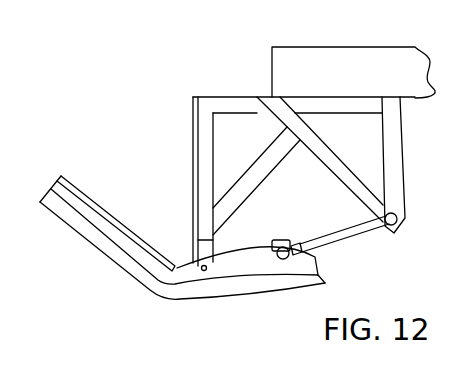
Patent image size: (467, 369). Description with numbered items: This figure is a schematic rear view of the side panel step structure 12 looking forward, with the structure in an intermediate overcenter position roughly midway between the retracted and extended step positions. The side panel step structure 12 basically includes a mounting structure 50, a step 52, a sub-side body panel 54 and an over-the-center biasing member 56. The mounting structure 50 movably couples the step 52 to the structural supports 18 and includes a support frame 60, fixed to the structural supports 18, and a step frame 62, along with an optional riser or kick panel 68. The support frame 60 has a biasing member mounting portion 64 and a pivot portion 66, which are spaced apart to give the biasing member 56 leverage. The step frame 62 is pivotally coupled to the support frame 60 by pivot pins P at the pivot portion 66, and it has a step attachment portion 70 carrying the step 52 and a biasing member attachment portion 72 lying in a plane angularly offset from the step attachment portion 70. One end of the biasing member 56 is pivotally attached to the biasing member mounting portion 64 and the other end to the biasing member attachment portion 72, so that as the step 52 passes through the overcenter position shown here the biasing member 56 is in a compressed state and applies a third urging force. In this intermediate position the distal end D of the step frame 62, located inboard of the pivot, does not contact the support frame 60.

The side panel step structure 12 is at (93, 94).
The structural support 18 is at (358, 68).
The mounting structure 50 is at (245, 49).
The step 52 is at (114, 213).
The sub-side body panel 54 is at (82, 237).
The over-the-center biasing member 56 is at (349, 234).
The support frame 60 is at (222, 97).
The step frame 62 is at (68, 198).
The biasing member mounting portion 64 is at (398, 198).
The pivot portion 66 is at (200, 255).
The kick panel 68 is at (193, 145).
The step attachment portion 70 is at (138, 252).
The biasing member attachment portion 72 is at (264, 260).
The distal end D is at (278, 238).
The pivot pin P is at (206, 272).